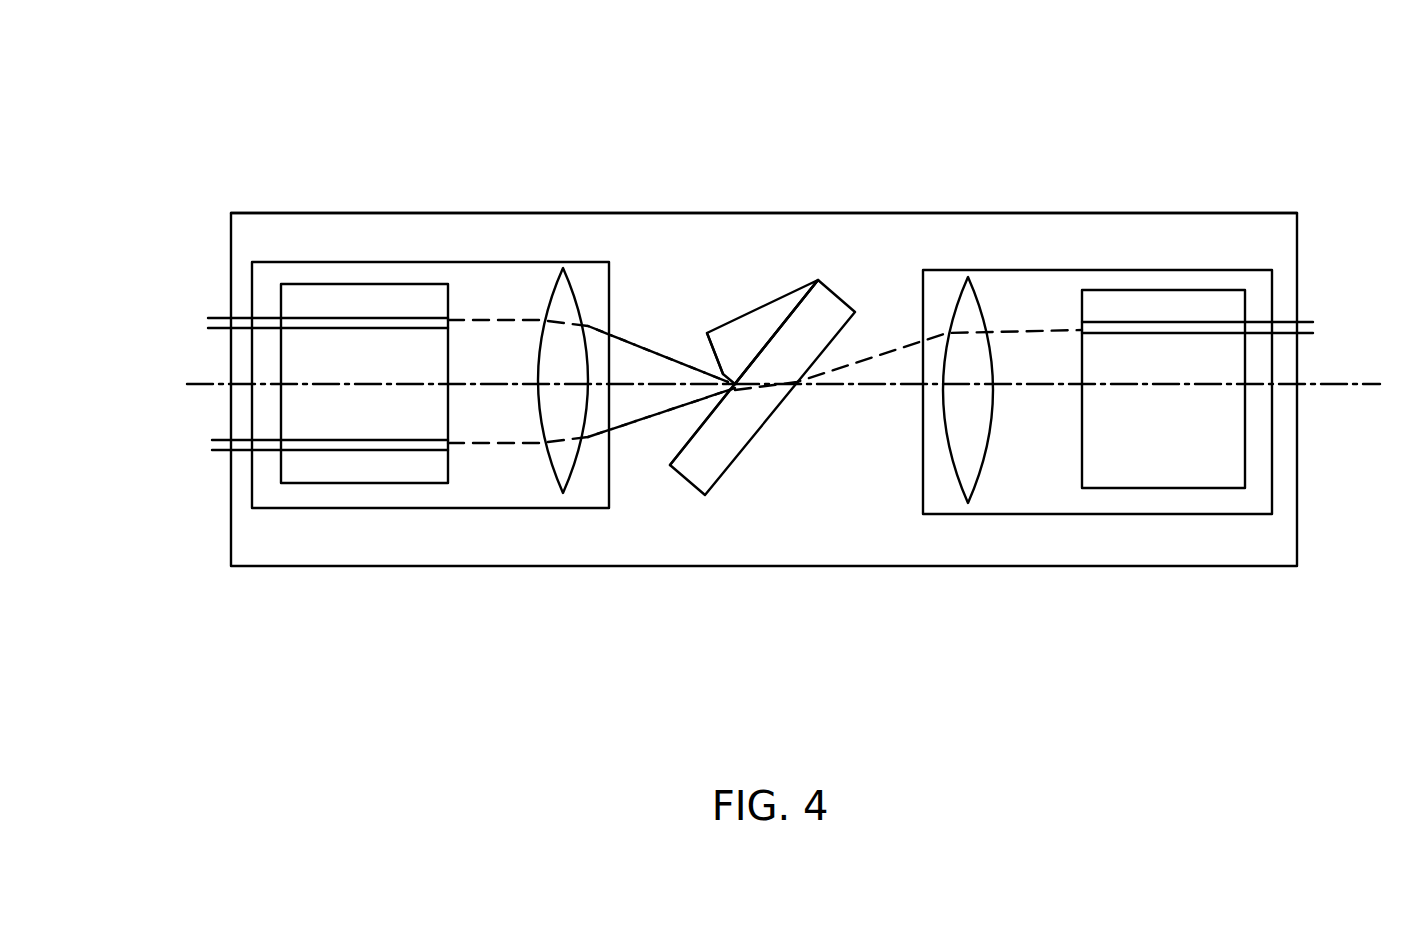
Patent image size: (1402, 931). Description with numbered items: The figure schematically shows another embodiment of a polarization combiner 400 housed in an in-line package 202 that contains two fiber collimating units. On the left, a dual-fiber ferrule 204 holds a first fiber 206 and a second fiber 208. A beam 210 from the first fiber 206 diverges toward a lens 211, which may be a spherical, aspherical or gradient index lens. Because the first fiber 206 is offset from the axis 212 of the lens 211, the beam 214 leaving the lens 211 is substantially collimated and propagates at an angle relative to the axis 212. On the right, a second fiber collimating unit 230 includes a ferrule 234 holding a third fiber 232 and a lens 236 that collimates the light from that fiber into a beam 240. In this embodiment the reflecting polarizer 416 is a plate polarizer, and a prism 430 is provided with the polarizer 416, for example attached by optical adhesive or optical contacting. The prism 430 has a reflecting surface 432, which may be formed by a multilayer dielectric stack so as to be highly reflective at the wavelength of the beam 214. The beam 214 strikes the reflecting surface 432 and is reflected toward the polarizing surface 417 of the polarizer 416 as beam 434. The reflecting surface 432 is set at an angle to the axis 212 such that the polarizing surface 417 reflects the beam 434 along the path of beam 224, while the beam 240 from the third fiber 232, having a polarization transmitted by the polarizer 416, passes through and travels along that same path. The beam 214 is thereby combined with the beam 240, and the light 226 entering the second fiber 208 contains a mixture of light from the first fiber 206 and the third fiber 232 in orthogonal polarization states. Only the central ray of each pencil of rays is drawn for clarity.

The polarization combiner 400 is at (253, 217).
The in-line package 202 is at (1183, 207).
The dual-fiber ferrule 204 is at (313, 488).
The first fiber 206 is at (222, 317).
The second fiber 208 is at (222, 452).
The beam 210 is at (498, 317).
The lens 211 is at (568, 280).
The axis 212 is at (197, 387).
The beam 214 is at (633, 337).
The beam 224 is at (637, 430).
The light 226 is at (503, 448).
The second fiber collimating unit 230 is at (1113, 267).
The third fiber 232 is at (1302, 318).
The ferrule 234 is at (1248, 265).
The lens 236 is at (982, 480).
The beam 240 is at (888, 353).
The reflecting polarizer 416 is at (830, 282).
The polarizing surface 417 is at (680, 465).
The prism 430 is at (790, 288).
The reflecting surface 432 is at (725, 375).
The beam 434 is at (732, 383).